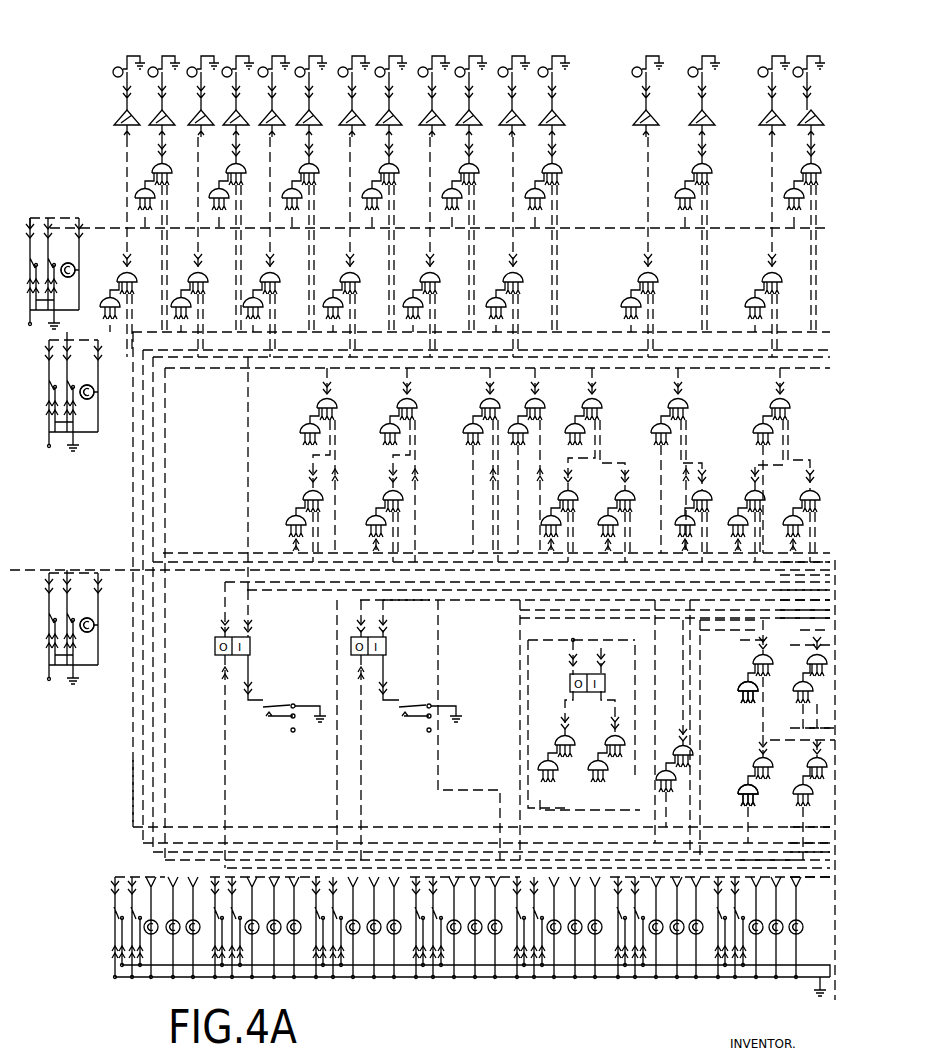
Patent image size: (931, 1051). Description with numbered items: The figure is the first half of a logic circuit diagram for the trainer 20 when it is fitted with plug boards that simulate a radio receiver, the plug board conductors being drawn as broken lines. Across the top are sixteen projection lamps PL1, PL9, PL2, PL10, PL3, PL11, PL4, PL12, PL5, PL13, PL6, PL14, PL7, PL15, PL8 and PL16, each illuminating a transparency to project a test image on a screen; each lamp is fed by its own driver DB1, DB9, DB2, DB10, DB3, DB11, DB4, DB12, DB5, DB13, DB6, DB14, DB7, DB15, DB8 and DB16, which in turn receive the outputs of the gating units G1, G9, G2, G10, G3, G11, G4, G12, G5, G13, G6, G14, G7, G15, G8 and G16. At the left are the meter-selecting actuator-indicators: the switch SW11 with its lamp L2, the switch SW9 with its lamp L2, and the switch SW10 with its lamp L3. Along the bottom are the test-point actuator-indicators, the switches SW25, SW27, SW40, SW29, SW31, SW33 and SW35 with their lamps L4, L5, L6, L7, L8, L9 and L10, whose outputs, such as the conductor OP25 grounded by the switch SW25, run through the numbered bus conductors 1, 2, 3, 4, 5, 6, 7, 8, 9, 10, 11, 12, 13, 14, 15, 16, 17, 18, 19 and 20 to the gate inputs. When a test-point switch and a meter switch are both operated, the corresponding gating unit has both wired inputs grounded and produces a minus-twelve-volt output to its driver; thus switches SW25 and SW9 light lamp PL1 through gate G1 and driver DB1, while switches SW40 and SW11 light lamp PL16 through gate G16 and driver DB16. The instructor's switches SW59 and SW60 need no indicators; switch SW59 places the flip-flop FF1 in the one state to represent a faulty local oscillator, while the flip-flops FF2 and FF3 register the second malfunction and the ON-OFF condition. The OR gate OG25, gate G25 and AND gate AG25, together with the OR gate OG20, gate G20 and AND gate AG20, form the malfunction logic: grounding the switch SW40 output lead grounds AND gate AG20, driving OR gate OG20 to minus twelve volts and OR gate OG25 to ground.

The projection lamp PL1 is at (117, 66).
The projection lamp PL2 is at (193, 66).
The projection lamp PL3 is at (264, 66).
The projection lamp PL4 is at (344, 66).
The projection lamp PL5 is at (424, 66).
The projection lamp PL6 is at (504, 66).
The projection lamp PL7 is at (638, 66).
The projection lamp PL8 is at (764, 66).
The projection lamp PL9 is at (154, 66).
The projection lamp PL10 is at (228, 66).
The projection lamp PL11 is at (301, 66).
The projection lamp PL12 is at (381, 66).
The projection lamp PL13 is at (461, 66).
The projection lamp PL14 is at (544, 66).
The projection lamp PL15 is at (694, 66).
The projection lamp PL16 is at (800, 66).
The driver DB1 is at (118, 124).
The driver DB2 is at (192, 124).
The driver DB3 is at (265, 124).
The driver DB4 is at (344, 124).
The driver DB5 is at (424, 124).
The driver DB6 is at (504, 124).
The driver DB7 is at (636, 122).
The driver DB8 is at (760, 122).
The driver DB9 is at (155, 124).
The driver DB10 is at (229, 124).
The driver DB11 is at (302, 124).
The driver DB12 is at (382, 124).
The driver DB13 is at (462, 124).
The driver DB14 is at (545, 124).
The driver DB15 is at (690, 123).
The driver DB16 is at (818, 122).
The gating unit G1 is at (122, 270).
The gating unit G2 is at (193, 270).
The gating unit G3 is at (265, 270).
The gating unit G4 is at (345, 270).
The gating unit G5 is at (425, 270).
The gating unit G6 is at (508, 270).
The gating unit G7 is at (643, 270).
The gating unit G8 is at (778, 272).
The gating unit G9 is at (168, 176).
The gating unit G10 is at (242, 176).
The gating unit G11 is at (315, 176).
The gating unit G12 is at (395, 176).
The gating unit G13 is at (475, 176).
The gating unit G14 is at (558, 174).
The gating unit G15 is at (712, 172).
The gating unit G16 is at (803, 170).
The switch SW9 is at (50, 378).
The switch SW10 is at (50, 610).
The switch SW11 is at (32, 252).
The lamp L2 is at (94, 390).
The lamp L3 is at (94, 623).
The flip-flop FF1 is at (250, 644).
The flip-flop FF2 is at (386, 644).
The flip-flop FF3 is at (568, 682).
The switch SW59 is at (262, 706).
The switch SW60 is at (398, 706).
The OR gate OG25 is at (753, 662).
The gate G25 is at (746, 683).
The AND gate AG25 is at (740, 698).
The OR gate OG20 is at (753, 767).
The gate G20 is at (746, 782).
The AND gate AG20 is at (739, 798).
The conductor OP25 is at (131, 770).
The line 1 is at (805, 577).
The line 2 is at (805, 563).
The line 3 is at (805, 589).
The line 4 is at (805, 598).
The line 5 is at (805, 607).
The line 6 is at (805, 616).
The line 7 is at (739, 619).
The line 8 is at (740, 634).
The line 9 is at (759, 646).
The line 10 is at (815, 636).
The line 11 is at (810, 649).
The line 12 is at (812, 720).
The line 13 is at (802, 745).
The line 14 is at (812, 818).
The line 15 is at (812, 840).
The line 16 is at (812, 853).
The line 17 is at (770, 850).
The line 18 is at (810, 876).
The bus line 19 is at (476, 963).
The trainer 20 is at (472, 986).
The switch SW25 is at (113, 905).
The switch SW27 is at (214, 905).
The switch SW40 is at (314, 905).
The switch SW29 is at (415, 905).
The switch SW31 is at (515, 905).
The switch SW33 is at (616, 905).
The switch SW35 is at (717, 905).
The lamp L4 is at (150, 918).
The lamp L5 is at (251, 918).
The lamp L6 is at (351, 918).
The lamp L7 is at (452, 918).
The lamp L8 is at (552, 918).
The lamp L9 is at (653, 918).
The lamp L10 is at (754, 918).